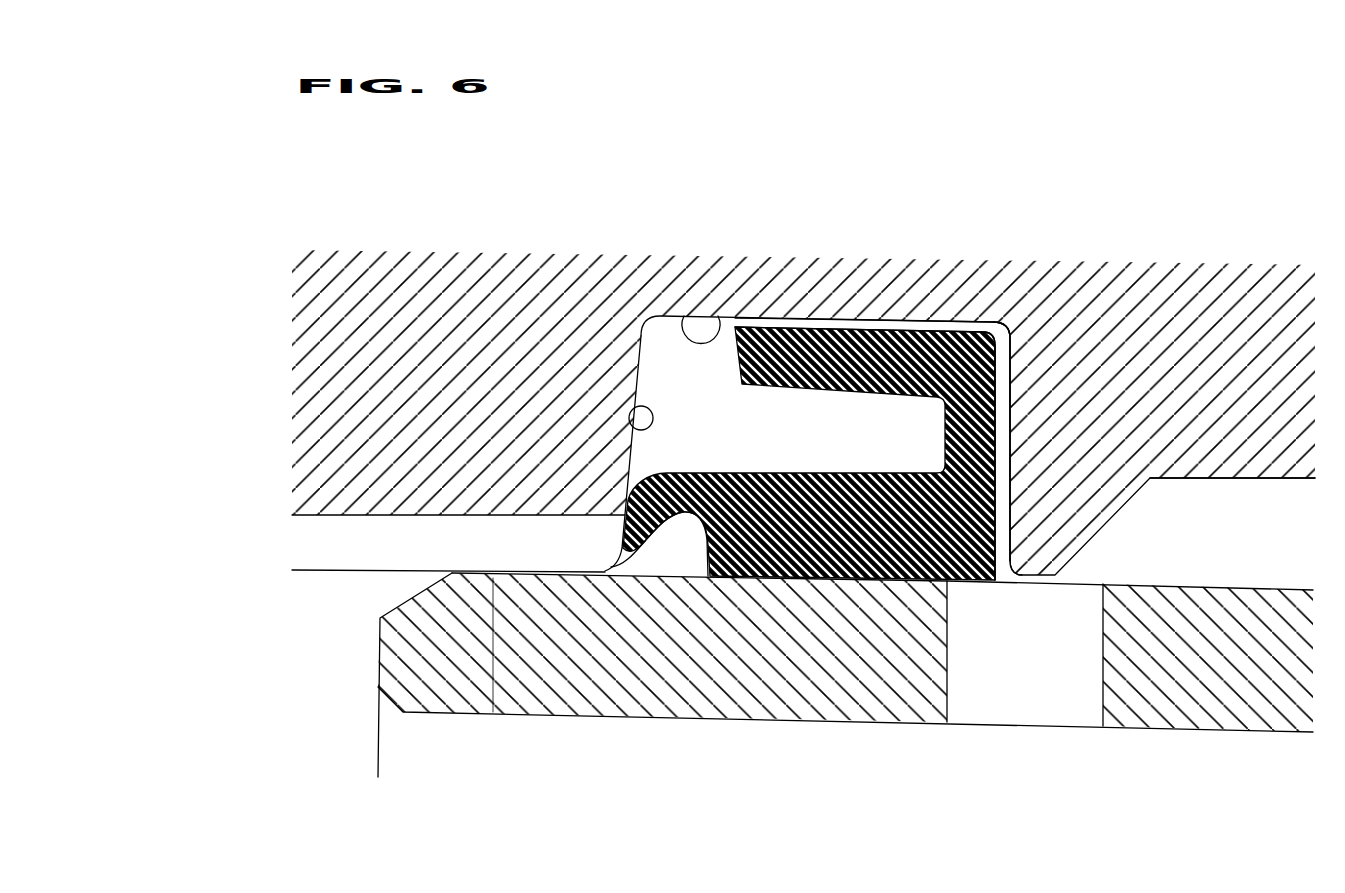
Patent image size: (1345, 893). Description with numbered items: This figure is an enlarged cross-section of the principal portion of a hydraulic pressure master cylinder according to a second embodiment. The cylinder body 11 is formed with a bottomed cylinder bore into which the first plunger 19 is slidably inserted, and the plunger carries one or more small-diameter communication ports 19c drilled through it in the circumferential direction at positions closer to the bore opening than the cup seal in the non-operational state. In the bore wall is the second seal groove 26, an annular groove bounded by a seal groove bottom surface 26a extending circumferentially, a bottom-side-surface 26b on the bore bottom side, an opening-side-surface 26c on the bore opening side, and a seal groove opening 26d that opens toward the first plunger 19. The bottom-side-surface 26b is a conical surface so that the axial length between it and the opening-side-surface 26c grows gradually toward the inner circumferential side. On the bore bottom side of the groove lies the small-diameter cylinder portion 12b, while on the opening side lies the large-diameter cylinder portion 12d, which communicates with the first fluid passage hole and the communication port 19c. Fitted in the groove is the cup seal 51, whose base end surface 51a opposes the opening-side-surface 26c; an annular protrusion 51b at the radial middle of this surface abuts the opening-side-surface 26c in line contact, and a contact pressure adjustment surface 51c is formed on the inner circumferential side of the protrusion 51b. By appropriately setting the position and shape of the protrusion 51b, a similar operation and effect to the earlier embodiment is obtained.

The cylinder body 11 is at (305, 446).
The small-diameter cylinder portion 12b is at (323, 572).
The large-diameter cylinder portion 12d is at (1240, 481).
The first plunger 19 is at (390, 668).
The communication port 19c is at (1010, 713).
The second seal groove 26 is at (644, 365).
The seal groove bottom surface 26a is at (683, 316).
The bottom-side-surface 26b is at (629, 419).
The opening-side-surface 26c is at (1000, 470).
The seal groove opening 26d is at (612, 567).
The cup seal 51 is at (913, 322).
The base end surface 51a is at (1005, 394).
The annular protrusion 51b is at (1005, 433).
The contact pressure adjustment surface 51c is at (1000, 524).